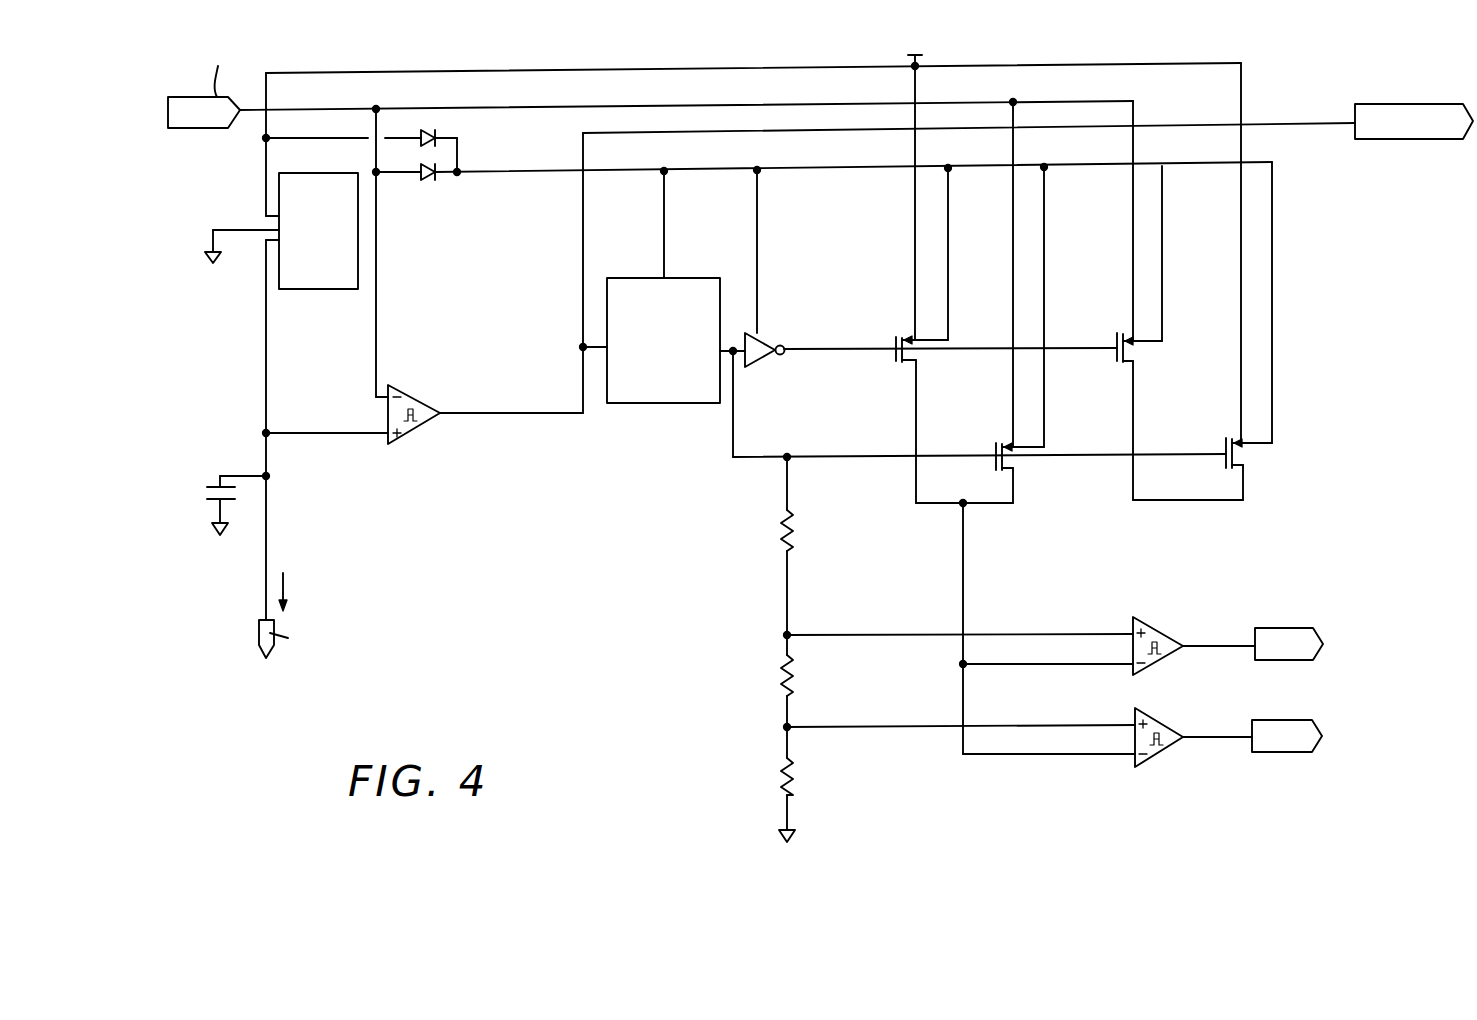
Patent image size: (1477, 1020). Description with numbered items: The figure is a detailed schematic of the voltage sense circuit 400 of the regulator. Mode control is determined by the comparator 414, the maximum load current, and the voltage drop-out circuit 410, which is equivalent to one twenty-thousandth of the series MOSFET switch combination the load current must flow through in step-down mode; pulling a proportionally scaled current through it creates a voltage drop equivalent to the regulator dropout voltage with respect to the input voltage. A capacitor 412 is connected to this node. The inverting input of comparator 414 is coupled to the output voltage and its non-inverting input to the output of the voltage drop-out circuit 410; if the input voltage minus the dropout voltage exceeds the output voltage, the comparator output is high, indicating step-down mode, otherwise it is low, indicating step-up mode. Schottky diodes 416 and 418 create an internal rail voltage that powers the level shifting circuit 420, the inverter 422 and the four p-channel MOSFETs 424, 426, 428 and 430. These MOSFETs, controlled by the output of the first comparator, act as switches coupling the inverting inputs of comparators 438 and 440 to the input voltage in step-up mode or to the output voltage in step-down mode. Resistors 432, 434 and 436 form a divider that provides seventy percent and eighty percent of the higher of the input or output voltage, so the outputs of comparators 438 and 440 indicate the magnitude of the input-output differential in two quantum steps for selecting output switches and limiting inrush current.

The voltage sense circuit 400 is at (521, 670).
The voltage drop-out circuit 410 is at (331, 289).
The capacitor 412 is at (202, 497).
The comparator 414 is at (410, 436).
The Schottky diode 416 is at (440, 134).
The Schottky diode 418 is at (428, 180).
The level shifting circuit 420 is at (636, 403).
The inverter 422 is at (762, 367).
The p-channel MOSFET 424 is at (907, 363).
The p-channel MOSFET 426 is at (1016, 463).
The p-channel MOSFET 428 is at (1135, 352).
The p-channel MOSFET 430 is at (1246, 466).
The resistor 432 is at (775, 524).
The resistor 434 is at (780, 672).
The resistor 436 is at (779, 776).
The comparator 438 is at (1165, 657).
The comparator 440 is at (1165, 749).